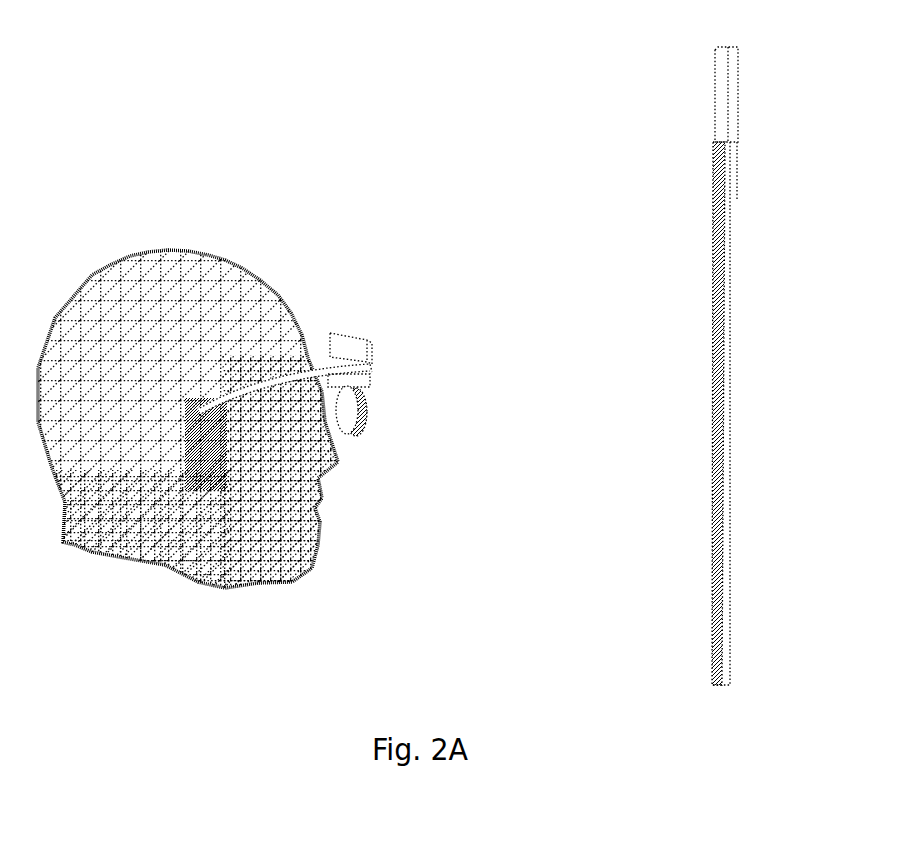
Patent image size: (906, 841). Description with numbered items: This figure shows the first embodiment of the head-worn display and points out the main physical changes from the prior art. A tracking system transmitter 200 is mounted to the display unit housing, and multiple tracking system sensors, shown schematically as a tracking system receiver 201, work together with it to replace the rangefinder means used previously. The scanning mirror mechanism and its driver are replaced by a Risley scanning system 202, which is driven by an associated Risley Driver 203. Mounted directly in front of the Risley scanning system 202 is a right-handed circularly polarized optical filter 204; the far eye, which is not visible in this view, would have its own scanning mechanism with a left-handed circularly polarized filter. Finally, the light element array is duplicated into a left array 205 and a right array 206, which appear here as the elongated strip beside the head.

The tracking system transmitter 200 is at (718, 48).
The tracking system receiver 201 is at (352, 338).
The Risley scanning system 202 is at (348, 433).
The Risley Driver 203 is at (370, 380).
The right-handed circularly polarized (RHCP) optical filter 204 is at (363, 415).
The left array 205 is at (715, 322).
The right array 206 is at (717, 473).